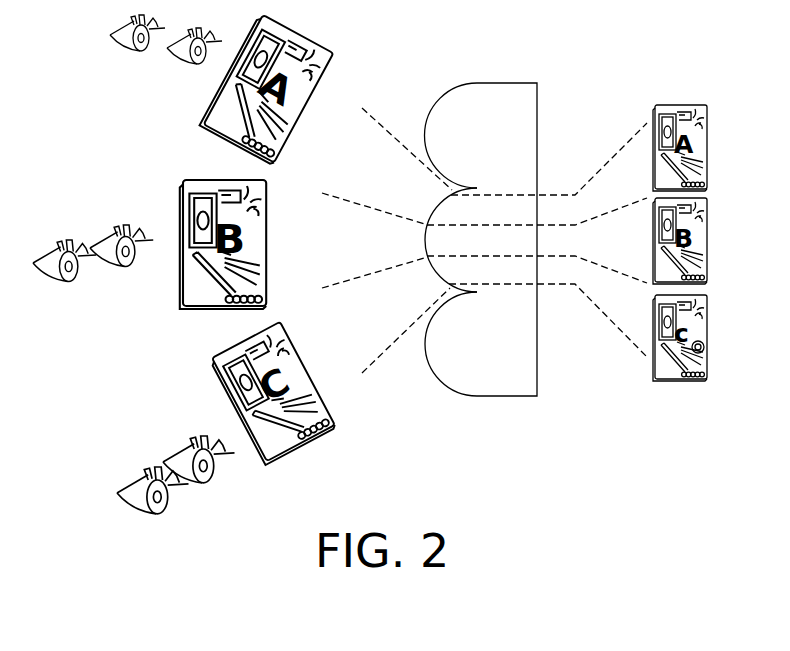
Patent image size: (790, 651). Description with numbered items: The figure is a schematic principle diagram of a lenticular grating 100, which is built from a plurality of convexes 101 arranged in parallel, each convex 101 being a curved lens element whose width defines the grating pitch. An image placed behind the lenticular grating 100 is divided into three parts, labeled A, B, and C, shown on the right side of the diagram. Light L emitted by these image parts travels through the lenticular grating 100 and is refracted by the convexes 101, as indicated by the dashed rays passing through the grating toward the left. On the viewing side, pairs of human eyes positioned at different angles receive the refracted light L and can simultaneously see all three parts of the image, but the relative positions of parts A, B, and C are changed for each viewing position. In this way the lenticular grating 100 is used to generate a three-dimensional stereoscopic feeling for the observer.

The lenticular grating 100 is at (508, 348).
The convex 101 is at (427, 363).
The light L is at (383, 127).